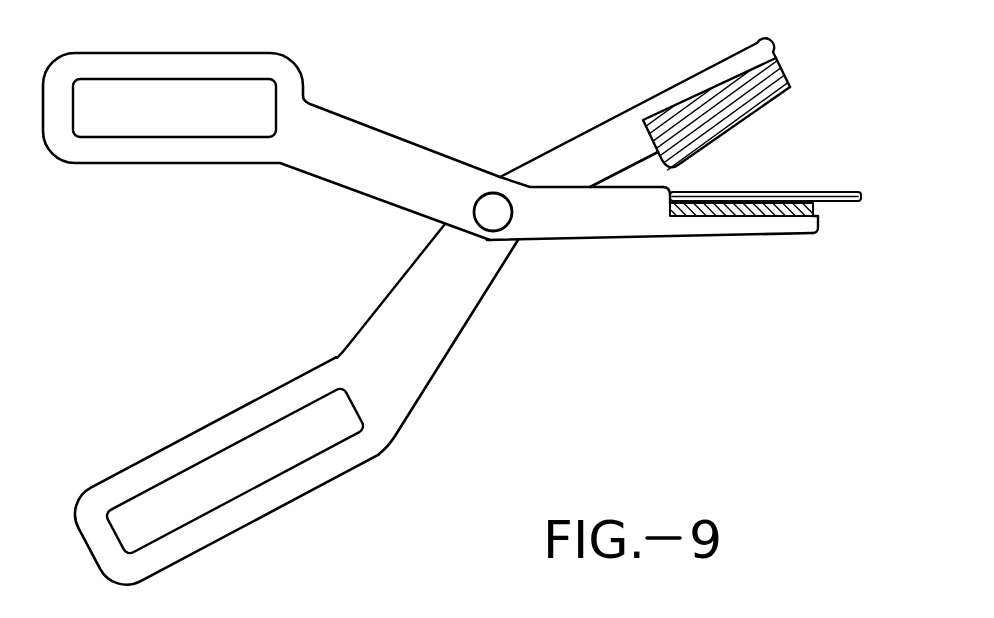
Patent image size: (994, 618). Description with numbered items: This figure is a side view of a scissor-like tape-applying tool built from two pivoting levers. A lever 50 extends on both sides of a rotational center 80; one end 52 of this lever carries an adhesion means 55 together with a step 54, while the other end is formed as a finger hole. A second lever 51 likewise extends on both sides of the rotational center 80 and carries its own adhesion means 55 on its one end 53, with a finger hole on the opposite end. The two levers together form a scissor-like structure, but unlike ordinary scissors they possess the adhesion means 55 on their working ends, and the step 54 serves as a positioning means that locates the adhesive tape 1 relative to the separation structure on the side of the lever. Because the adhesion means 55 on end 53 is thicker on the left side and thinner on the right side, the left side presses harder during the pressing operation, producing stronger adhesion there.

The adhesive tape 1 is at (794, 191).
The lever 50 is at (370, 145).
The lever 51 is at (408, 380).
The end of lever 52 is at (596, 223).
The end of lever 53 is at (596, 146).
The step 54 is at (667, 204).
The adhesion means 55 is at (703, 102).
The rotational center 80 is at (490, 202).